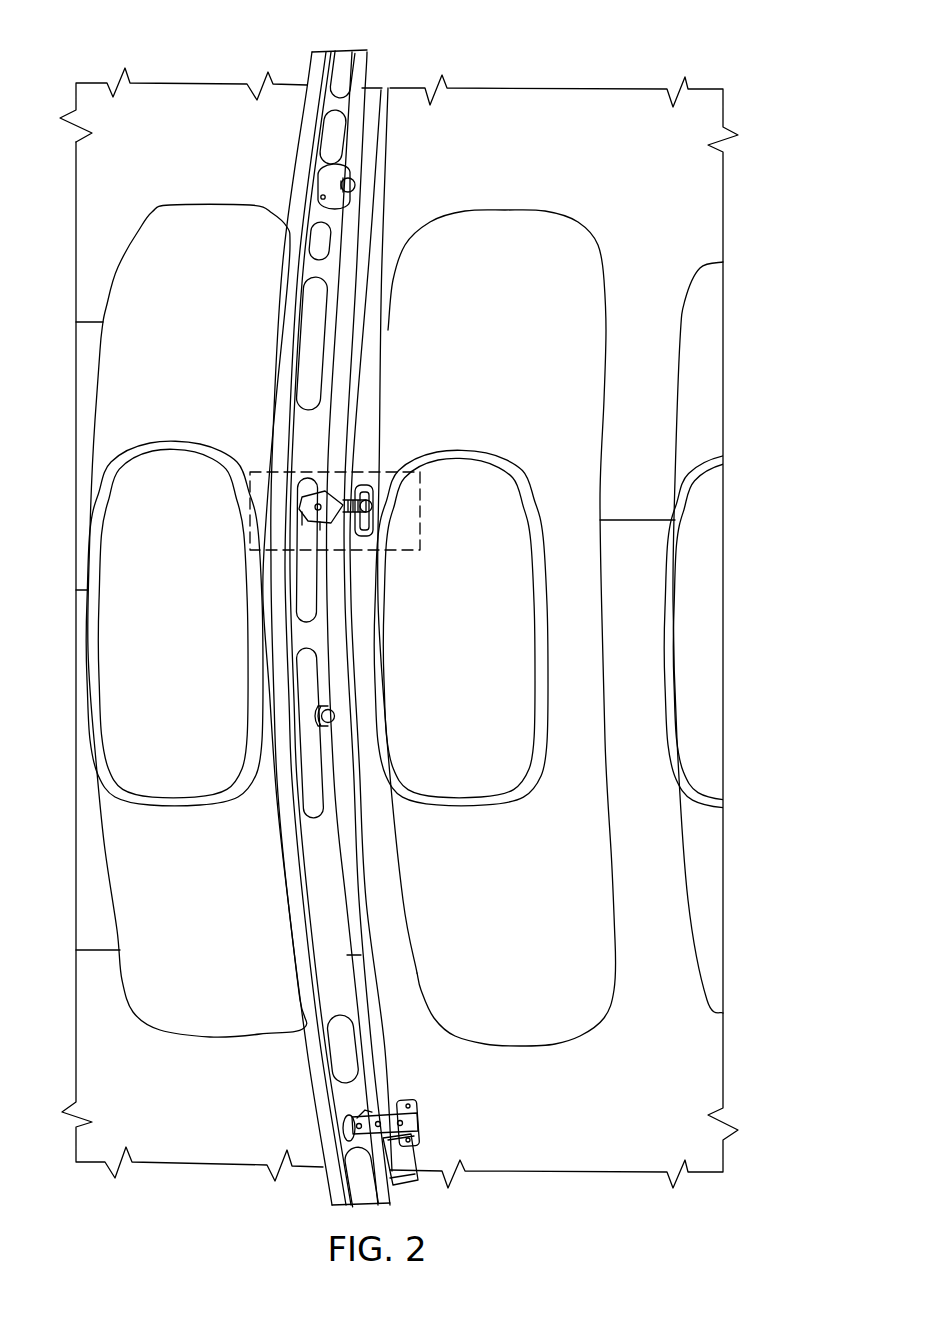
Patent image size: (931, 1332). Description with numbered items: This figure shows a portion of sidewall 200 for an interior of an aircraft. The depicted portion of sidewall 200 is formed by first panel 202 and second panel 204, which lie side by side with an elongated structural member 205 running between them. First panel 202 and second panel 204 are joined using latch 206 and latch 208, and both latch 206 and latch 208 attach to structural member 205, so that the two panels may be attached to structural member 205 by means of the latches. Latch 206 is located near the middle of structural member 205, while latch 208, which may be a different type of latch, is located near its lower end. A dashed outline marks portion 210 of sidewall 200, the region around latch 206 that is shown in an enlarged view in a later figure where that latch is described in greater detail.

The sidewall 200 is at (645, 72).
The first panel 202 is at (507, 99).
The second panel 204 is at (190, 94).
The structural member 205 is at (297, 158).
The latch 206 is at (357, 544).
The latch 208 is at (424, 1109).
The portion 210 is at (421, 513).